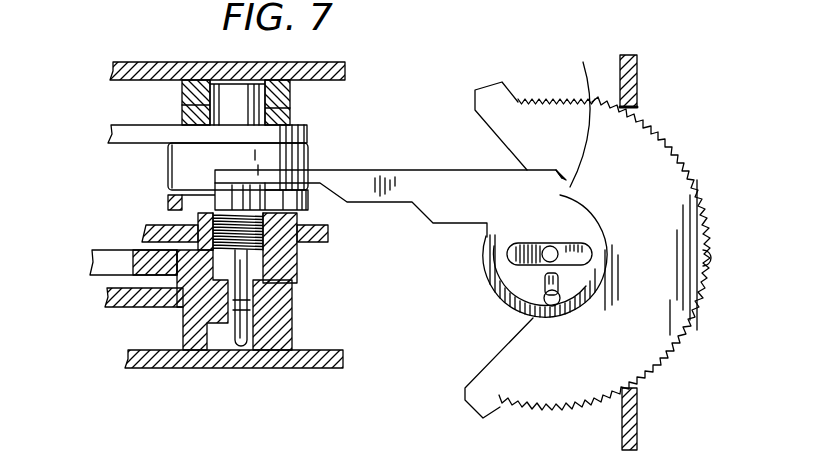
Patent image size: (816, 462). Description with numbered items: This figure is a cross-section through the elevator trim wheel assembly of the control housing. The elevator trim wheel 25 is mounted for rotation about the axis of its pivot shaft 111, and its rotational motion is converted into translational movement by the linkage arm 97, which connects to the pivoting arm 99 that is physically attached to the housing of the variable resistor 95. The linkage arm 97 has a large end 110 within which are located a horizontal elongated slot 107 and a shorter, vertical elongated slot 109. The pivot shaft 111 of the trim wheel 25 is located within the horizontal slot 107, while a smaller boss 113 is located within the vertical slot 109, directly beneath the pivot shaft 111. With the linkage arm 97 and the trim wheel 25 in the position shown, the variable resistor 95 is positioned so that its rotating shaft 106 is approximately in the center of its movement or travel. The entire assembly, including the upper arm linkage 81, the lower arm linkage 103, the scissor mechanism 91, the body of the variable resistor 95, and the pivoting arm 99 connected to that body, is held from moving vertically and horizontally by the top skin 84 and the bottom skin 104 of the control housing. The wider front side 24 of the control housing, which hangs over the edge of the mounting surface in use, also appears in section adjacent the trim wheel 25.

The front side 24 is at (637, 423).
The elevator trim wheel 25 is at (662, 361).
The upper arm linkage 81 is at (135, 125).
The top skin 84 is at (195, 62).
The scissor mechanism 91 is at (107, 249).
The variable resistor 95 is at (307, 157).
The linkage arm 97 is at (433, 170).
The pivoting arm 99 is at (168, 203).
The lower arm linkage 103 is at (122, 308).
The bottom skin 104 is at (170, 370).
The rotating shaft 106 is at (247, 350).
The horizontal elongated slot 107 is at (507, 250).
The vertical elongated slot 109 is at (545, 285).
The large end 110 is at (567, 117).
The pivot shaft 111 is at (558, 250).
The boss 113 is at (558, 300).